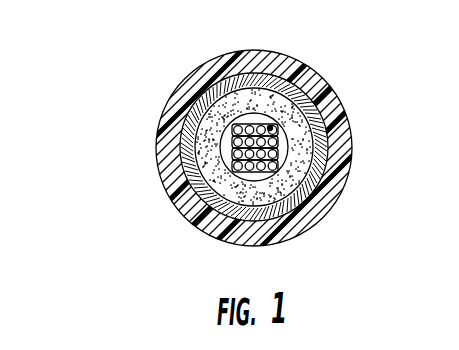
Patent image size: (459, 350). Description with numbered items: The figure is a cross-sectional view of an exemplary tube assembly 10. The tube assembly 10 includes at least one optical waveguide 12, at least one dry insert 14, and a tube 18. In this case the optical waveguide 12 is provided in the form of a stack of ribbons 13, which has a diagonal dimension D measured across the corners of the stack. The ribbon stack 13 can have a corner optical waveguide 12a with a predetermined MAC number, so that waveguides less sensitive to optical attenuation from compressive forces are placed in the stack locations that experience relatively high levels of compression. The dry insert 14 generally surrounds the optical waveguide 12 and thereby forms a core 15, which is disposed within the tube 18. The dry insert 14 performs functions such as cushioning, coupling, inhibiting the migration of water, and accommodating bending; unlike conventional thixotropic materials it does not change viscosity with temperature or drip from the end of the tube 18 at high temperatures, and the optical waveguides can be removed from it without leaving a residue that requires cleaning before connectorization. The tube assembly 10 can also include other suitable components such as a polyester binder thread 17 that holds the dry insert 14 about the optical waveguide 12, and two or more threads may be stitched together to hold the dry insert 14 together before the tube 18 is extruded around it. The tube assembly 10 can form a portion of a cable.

The tube assembly 10 is at (174, 56).
The optical waveguide 12 is at (265, 145).
The corner optical waveguide 12a is at (238, 166).
The stack of ribbons 13 is at (265, 136).
The dry insert 14 is at (305, 159).
The core 15 is at (209, 182).
The polyester binder thread 17 is at (253, 73).
The tube 18 is at (216, 142).
The diagonal dimension D is at (272, 128).